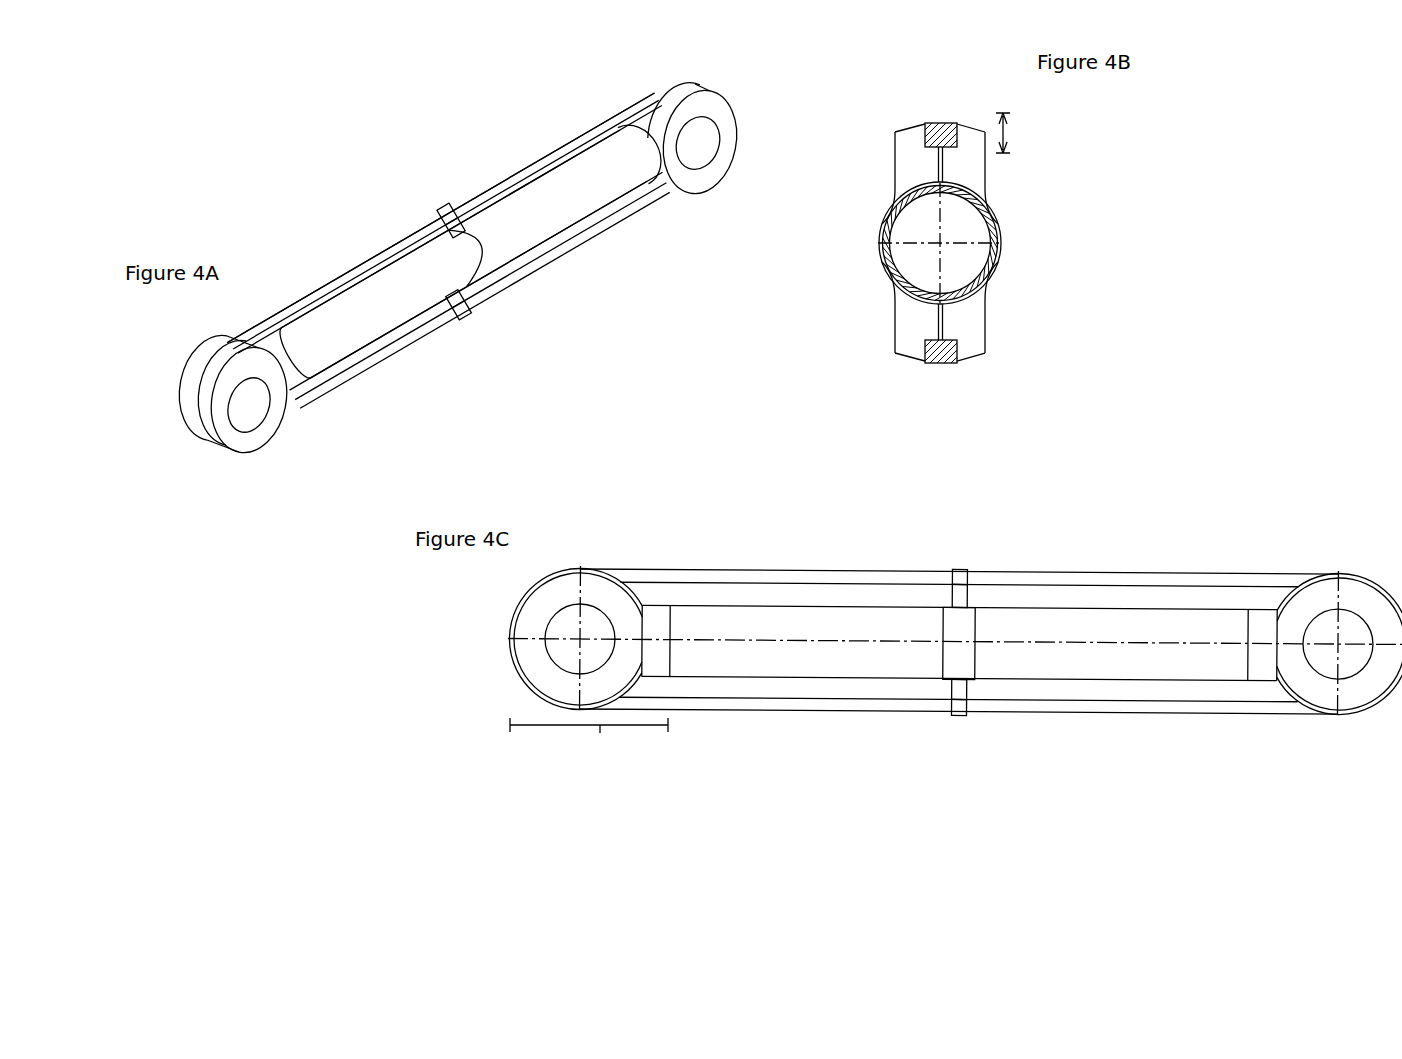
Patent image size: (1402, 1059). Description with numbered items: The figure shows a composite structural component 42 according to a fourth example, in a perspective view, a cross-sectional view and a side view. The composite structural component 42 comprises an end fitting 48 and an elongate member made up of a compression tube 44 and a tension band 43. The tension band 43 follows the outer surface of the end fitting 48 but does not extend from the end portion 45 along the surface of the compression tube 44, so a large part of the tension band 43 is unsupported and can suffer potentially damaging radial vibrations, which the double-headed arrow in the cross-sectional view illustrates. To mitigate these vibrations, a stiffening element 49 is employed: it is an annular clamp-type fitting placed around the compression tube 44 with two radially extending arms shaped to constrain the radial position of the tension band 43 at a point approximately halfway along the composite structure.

In FIG. 4A, the composite structural component 42 is at (283, 215).
In FIG. 4C, the composite structural component 42 is at (818, 539).
In FIG. 4A, the tension band 43 is at (347, 277).
In FIG. 4B, the tension band 43 is at (945, 354).
In FIG. 4C, the tension band 43 is at (652, 577).
In FIG. 4A, the compression tube 44 is at (542, 213).
In FIG. 4B, the compression tube 44 is at (890, 252).
In FIG. 4C, the compression tube 44 is at (715, 665).
In FIG. 4C, the end portion 45 is at (589, 743).
In FIG. 4A, the end fitting 48 is at (713, 110).
In FIG. 4B, the end fitting 48 is at (970, 174).
In FIG. 4C, the end fitting 48 is at (548, 672).
In FIG. 4A, the stiffening element 49 is at (453, 212).
In FIG. 4B, the stiffening element 49 is at (942, 327).
In FIG. 4C, the stiffening element 49 is at (962, 628).